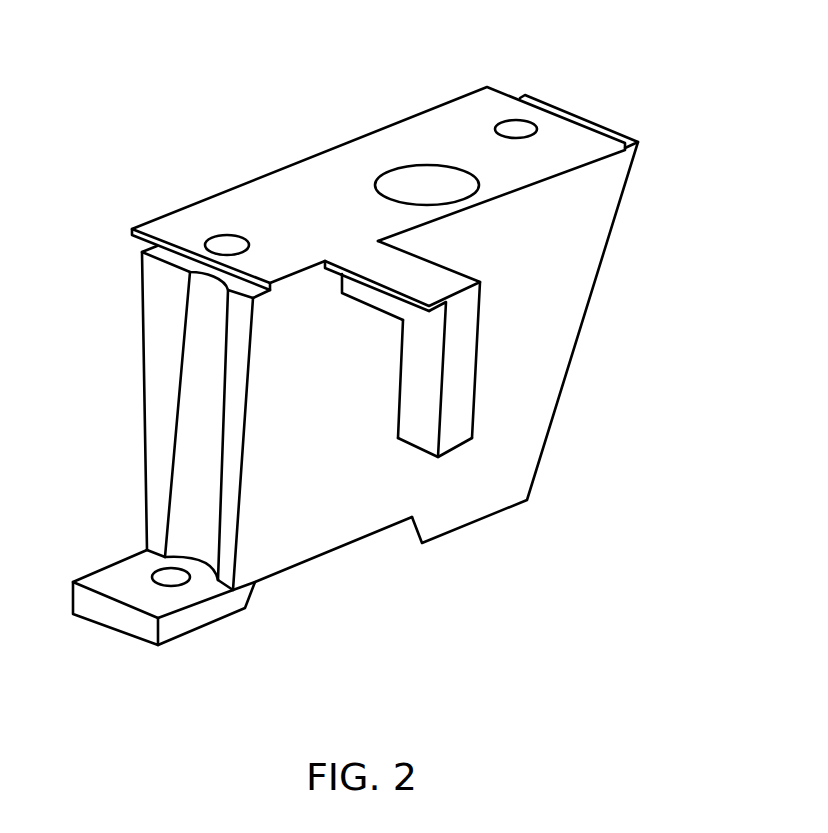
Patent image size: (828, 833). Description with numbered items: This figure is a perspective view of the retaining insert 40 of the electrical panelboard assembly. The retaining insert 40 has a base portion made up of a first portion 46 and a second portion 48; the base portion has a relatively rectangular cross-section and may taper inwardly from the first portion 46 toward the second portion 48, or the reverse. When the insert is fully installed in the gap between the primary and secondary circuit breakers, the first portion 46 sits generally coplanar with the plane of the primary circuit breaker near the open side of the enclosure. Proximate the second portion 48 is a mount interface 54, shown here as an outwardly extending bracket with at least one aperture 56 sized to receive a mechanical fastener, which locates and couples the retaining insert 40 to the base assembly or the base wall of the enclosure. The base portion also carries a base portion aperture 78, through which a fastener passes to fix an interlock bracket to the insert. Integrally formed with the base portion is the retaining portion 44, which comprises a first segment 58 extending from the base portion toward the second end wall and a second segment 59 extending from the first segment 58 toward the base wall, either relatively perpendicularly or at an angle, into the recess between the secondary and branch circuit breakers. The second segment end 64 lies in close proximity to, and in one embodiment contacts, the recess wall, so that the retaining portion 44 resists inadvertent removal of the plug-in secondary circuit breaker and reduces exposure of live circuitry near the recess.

The retaining insert 40 is at (287, 72).
The retaining portion 44 is at (488, 335).
The first portion 46 is at (335, 185).
The second portion 48 is at (490, 517).
The mount interface 54 is at (191, 642).
The aperture 56 is at (160, 568).
The first segment 58 is at (423, 280).
The second segment 59 is at (460, 402).
The second segment end 64 is at (418, 450).
The base portion aperture 78 is at (227, 235).